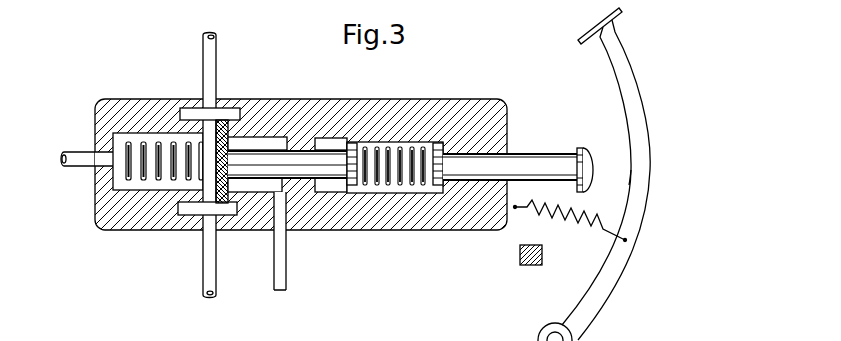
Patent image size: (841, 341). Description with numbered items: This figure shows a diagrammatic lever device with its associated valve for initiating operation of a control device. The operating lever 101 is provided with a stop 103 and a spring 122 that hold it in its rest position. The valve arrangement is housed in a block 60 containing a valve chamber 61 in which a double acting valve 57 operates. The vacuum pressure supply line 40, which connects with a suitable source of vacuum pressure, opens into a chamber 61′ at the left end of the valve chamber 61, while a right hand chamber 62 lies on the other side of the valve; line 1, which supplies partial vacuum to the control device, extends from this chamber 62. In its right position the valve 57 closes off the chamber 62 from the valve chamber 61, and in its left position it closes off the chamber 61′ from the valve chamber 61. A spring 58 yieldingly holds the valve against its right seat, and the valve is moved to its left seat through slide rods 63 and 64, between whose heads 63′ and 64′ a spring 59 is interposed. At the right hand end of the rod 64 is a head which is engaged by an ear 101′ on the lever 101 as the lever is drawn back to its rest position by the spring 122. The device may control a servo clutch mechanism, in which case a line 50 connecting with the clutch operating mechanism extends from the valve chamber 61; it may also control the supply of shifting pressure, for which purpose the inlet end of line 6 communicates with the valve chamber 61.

The line 1 is at (278, 255).
The line 6 is at (210, 265).
The vacuum pressure supply line 40 is at (90, 162).
The line 50 is at (213, 52).
The double acting valve 57 is at (221, 130).
The spring 58 is at (142, 147).
The spring 59 is at (408, 158).
The body block 60 is at (360, 218).
The valve chamber 61 is at (228, 117).
The chamber 61′ is at (167, 150).
The chamber 62 is at (255, 145).
The slide rod 63 is at (300, 163).
The head 63′ is at (349, 145).
The slide rod 64 is at (525, 167).
The head 64′ is at (443, 147).
The operating lever 101 is at (632, 95).
The ear 101′ is at (628, 180).
The stop 103 is at (533, 265).
The spring 122 is at (572, 222).